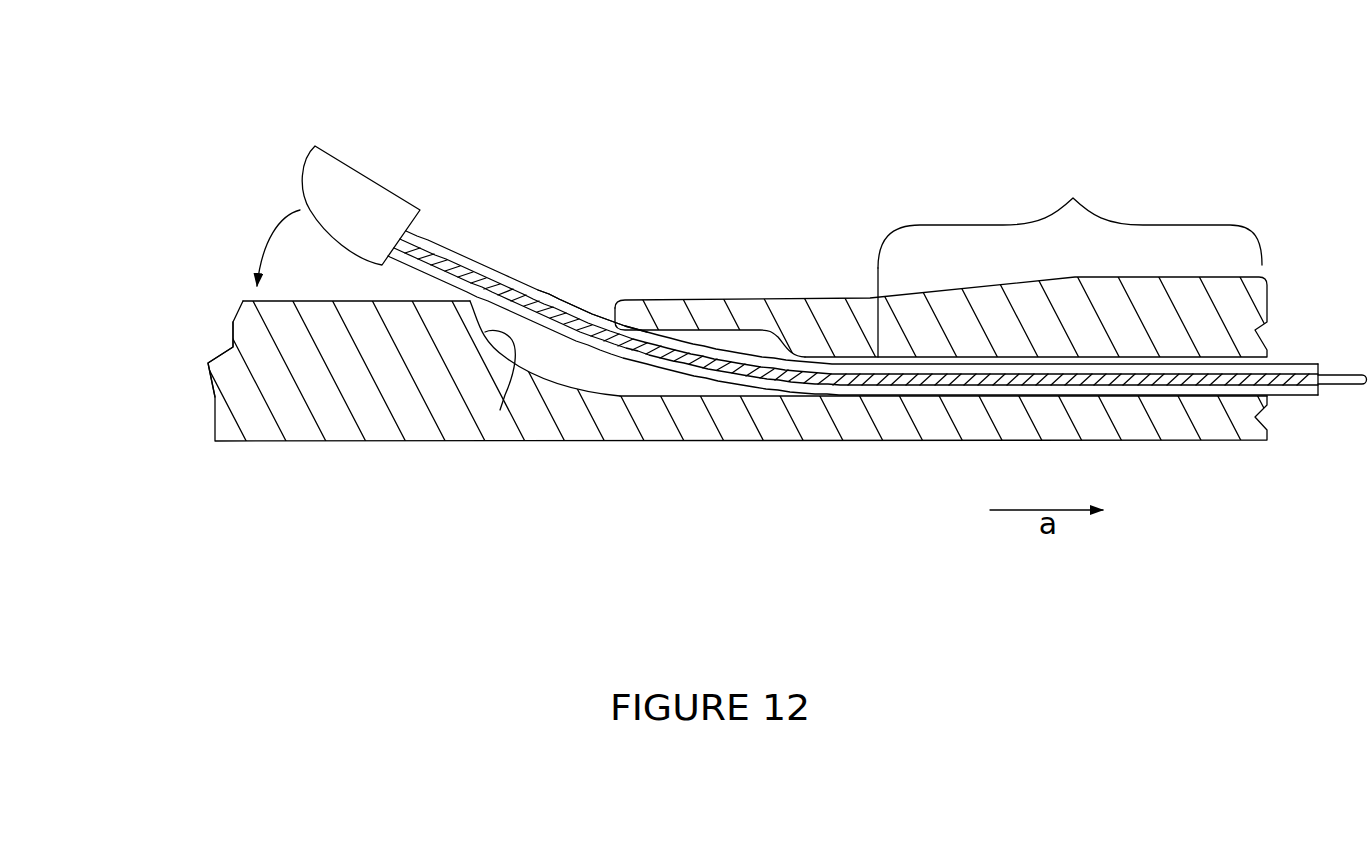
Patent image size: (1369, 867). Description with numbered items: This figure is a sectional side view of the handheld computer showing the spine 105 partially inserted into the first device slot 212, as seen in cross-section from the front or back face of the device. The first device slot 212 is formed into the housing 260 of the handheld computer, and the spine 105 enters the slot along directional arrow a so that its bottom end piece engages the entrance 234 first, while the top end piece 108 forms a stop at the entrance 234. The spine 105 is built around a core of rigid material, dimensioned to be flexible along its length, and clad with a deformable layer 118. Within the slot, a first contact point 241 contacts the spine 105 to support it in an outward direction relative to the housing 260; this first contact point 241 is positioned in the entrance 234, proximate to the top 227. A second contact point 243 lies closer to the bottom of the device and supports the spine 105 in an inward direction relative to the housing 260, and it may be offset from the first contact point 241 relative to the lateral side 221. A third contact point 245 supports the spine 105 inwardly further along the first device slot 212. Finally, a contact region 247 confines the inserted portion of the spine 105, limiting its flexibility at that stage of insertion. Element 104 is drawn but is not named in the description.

The inner tubular member 104 is at (438, 250).
The spine 105 is at (512, 266).
The top end piece 108 is at (345, 185).
The deformable layer 118 is at (528, 296).
The first device slot 212 is at (574, 298).
The lateral side 221 is at (835, 298).
The top 227 is at (214, 421).
The entrance 234 is at (516, 368).
The first contact point 241 is at (466, 304).
The second contact point 243 is at (629, 328).
The third contact point 245 is at (848, 400).
The contact region 247 is at (1070, 198).
The housing 260 is at (233, 377).